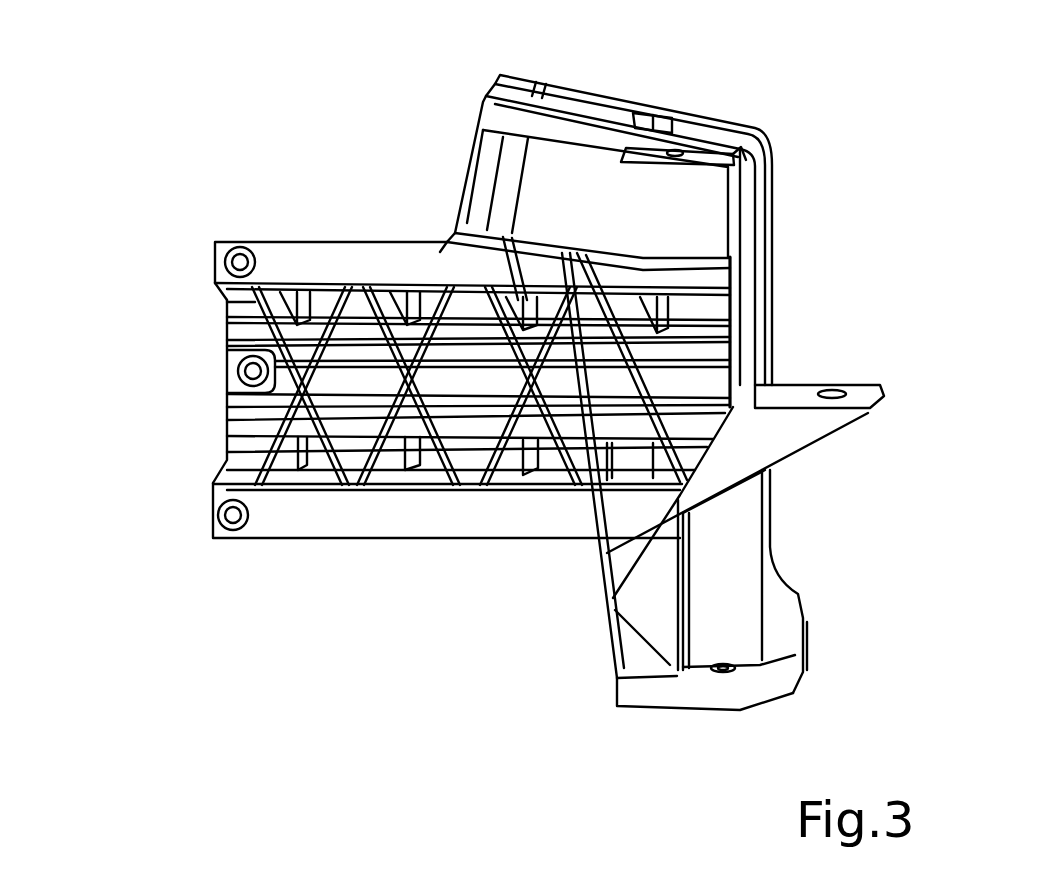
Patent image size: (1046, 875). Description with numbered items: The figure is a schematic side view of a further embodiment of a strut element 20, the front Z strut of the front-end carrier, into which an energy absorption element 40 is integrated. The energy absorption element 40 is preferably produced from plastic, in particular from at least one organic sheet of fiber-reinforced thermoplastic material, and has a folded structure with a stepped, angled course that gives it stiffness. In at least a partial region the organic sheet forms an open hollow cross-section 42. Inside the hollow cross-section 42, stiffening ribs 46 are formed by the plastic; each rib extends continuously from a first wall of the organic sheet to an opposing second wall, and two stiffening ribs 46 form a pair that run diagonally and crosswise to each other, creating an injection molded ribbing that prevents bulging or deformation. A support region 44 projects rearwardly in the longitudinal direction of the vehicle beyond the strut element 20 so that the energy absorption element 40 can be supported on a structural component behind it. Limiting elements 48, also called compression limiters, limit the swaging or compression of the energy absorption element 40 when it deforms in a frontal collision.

The strut element 20 is at (688, 143).
The energy absorption element 40 is at (414, 536).
The hollow cross-section 42 is at (223, 407).
The support region 44 is at (298, 196).
The stiffening ribs 46 is at (388, 300).
The limiting elements 48 is at (236, 262).